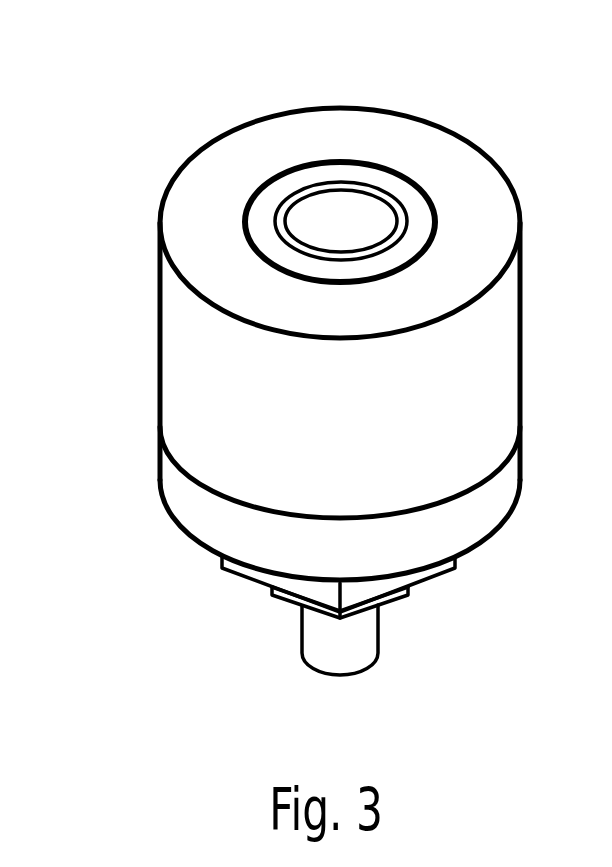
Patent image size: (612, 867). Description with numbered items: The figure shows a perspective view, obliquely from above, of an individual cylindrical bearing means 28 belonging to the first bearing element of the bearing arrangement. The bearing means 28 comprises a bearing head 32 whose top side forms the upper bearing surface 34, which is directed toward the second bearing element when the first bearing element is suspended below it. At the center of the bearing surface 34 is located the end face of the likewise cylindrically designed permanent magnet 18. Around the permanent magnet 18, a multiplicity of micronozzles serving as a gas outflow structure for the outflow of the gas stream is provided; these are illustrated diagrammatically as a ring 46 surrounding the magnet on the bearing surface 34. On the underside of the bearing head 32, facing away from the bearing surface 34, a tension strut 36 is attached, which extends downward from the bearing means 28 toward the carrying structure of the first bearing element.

The bearing means 28 is at (165, 132).
The bearing head 32 is at (159, 356).
The bearing surface 34 is at (446, 170).
The ring 46 is at (380, 163).
The permanent magnet 18 is at (328, 218).
The tension strut 36 is at (365, 647).